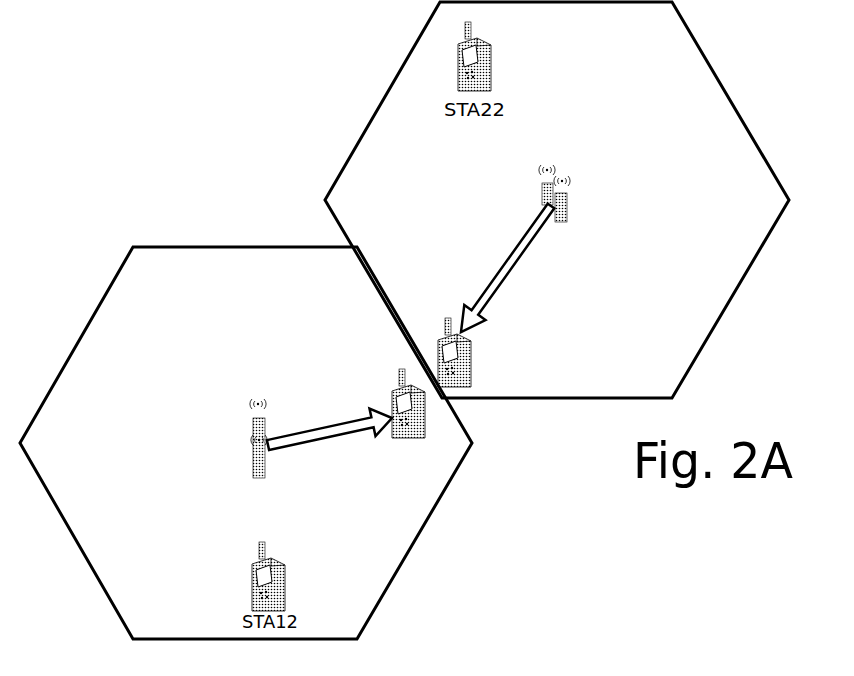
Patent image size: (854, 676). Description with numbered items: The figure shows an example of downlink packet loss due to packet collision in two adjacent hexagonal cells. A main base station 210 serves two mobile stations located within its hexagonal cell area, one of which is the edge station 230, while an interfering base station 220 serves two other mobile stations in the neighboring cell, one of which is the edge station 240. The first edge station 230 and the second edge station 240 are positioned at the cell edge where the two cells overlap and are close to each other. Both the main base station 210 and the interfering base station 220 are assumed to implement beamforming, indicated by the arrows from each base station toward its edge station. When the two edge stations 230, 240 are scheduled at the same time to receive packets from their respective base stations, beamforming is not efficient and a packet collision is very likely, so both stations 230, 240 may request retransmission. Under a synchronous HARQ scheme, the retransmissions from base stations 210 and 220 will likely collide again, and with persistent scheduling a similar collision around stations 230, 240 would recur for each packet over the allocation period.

The main base station 210 is at (251, 427).
The interfering base station 220 is at (577, 216).
The STA11 230 is at (387, 410).
The STA21 240 is at (486, 366).